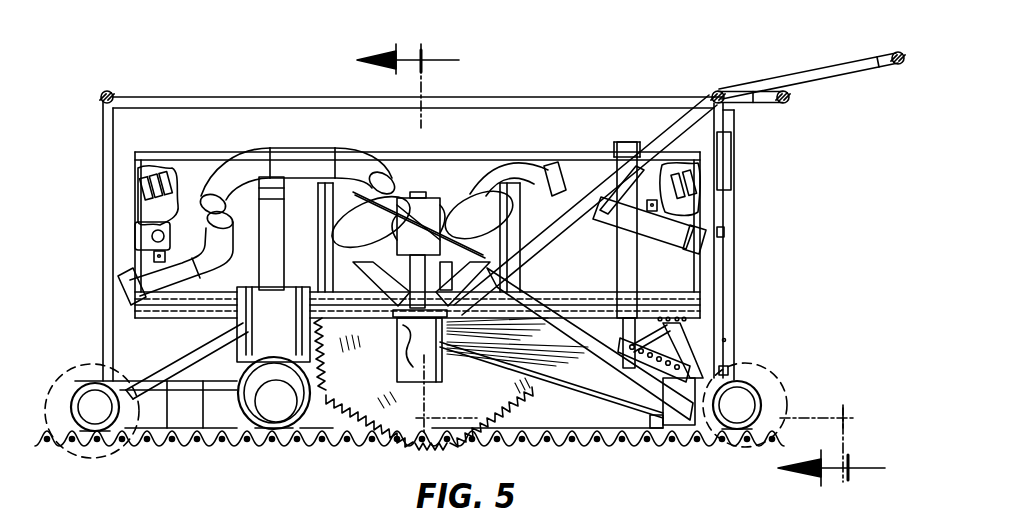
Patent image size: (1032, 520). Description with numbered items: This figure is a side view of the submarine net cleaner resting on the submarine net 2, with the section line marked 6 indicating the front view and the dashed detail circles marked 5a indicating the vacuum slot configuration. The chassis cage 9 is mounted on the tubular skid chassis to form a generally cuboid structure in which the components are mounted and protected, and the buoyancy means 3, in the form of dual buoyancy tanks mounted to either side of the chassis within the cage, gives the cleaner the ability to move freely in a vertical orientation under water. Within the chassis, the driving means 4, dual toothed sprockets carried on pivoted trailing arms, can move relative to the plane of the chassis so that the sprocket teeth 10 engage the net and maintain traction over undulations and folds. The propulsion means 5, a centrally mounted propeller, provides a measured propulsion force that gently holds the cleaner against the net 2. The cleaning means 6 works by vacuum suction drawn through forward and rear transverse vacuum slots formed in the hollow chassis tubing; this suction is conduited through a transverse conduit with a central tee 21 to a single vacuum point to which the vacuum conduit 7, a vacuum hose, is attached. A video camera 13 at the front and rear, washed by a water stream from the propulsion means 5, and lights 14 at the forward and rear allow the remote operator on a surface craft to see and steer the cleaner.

The submarine net 2 is at (571, 453).
The buoyancy means 3 is at (575, 180).
The driving means (sprockets) 4 is at (379, 389).
The propulsion means 5 is at (451, 192).
The wheel detail 5a is at (110, 463).
The cleaning means 6 is at (621, 265).
The vacuum conduit 7 is at (271, 407).
The chassis cage 9 is at (187, 104).
The sprocket teeth 10 is at (367, 408).
The video camera 13 is at (124, 283).
The lights 14 is at (142, 182).
The central tee 21 is at (257, 325).